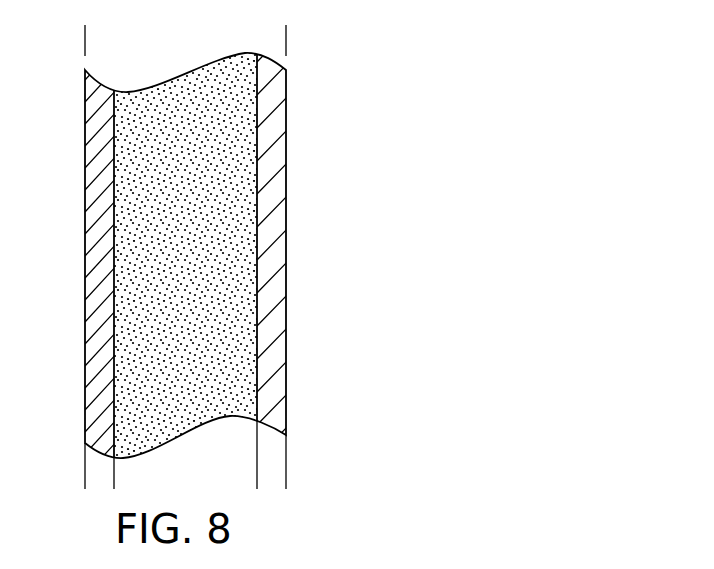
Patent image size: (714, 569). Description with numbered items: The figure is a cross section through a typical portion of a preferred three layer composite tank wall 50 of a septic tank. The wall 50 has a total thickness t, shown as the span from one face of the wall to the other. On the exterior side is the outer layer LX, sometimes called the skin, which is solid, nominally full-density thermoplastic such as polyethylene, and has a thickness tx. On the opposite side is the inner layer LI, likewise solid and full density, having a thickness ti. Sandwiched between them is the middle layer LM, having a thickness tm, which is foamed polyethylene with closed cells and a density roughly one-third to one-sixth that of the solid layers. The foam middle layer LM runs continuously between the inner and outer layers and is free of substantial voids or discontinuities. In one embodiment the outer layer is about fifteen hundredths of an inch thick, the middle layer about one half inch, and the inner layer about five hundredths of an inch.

The three layer tank wall 50 is at (350, 219).
The inner layer LI is at (85, 273).
The outer layer LX is at (276, 110).
The middle layer LM is at (236, 313).
The total thickness t is at (286, 31).
The inner layer thickness ti is at (142, 467).
The middle layer thickness tm is at (257, 482).
The outer layer thickness tx is at (235, 455).